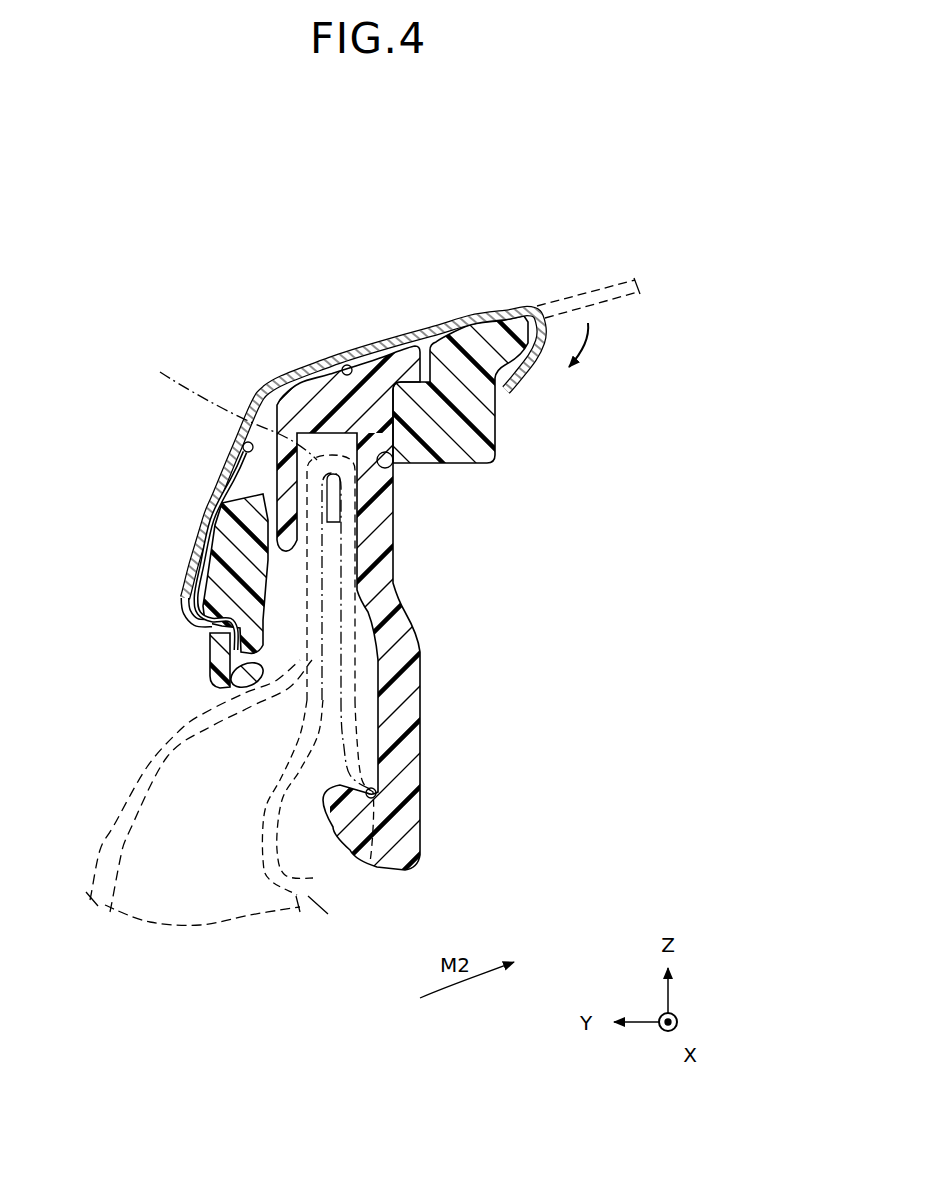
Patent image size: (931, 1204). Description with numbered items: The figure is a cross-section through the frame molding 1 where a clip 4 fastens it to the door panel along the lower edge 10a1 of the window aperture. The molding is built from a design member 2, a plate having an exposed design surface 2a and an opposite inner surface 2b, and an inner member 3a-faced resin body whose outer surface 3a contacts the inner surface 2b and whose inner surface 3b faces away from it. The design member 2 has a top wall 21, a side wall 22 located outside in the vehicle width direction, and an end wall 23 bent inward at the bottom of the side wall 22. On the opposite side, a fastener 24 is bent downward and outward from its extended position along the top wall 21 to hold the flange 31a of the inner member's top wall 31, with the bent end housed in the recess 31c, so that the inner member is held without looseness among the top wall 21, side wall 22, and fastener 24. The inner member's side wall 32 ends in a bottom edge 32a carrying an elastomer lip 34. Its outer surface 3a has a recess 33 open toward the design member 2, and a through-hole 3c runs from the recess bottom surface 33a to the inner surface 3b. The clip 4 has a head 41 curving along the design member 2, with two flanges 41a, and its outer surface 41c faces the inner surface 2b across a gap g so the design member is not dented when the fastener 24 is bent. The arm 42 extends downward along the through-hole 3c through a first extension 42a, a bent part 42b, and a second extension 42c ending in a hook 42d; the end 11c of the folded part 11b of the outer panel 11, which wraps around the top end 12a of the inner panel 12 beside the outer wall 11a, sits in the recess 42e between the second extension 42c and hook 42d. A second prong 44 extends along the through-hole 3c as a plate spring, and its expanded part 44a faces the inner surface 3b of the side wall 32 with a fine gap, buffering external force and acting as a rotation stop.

The frame molding 1 is at (251, 206).
The design member 2 is at (516, 300).
The design surface 2a is at (370, 350).
The inner surface 2b is at (345, 366).
The outer surface 3a is at (484, 335).
The inner surface 3b is at (460, 460).
The through-hole 3c is at (395, 466).
The clip 4 is at (258, 388).
The lower edge 10a1 is at (213, 399).
The outer panel 11 is at (109, 822).
The outer wall 11a is at (147, 770).
The folded part 11b is at (355, 707).
The end 11c is at (370, 862).
The inner panel 12 is at (270, 866).
The top end 12a is at (355, 553).
The top wall 21 is at (462, 330).
The side wall 22 is at (267, 517).
The end wall 23 is at (203, 622).
The fastener 24 is at (593, 303).
The top wall 31 is at (490, 430).
The flange 31a is at (560, 320).
The recess 31c is at (497, 412).
The side wall 32 is at (195, 593).
The bottom edge 32a is at (217, 657).
The recess 33 is at (424, 372).
The bottom surface 33a is at (418, 362).
The lip 34 is at (232, 680).
The head 41 is at (300, 395).
The flange 41a is at (391, 352).
The outer surface 41c is at (282, 378).
The arm 42 is at (425, 845).
The first extension 42a is at (380, 520).
The bent part 42b is at (390, 600).
The second extension 42c is at (410, 747).
The hook 42d is at (330, 822).
The recess 42e is at (378, 787).
The second prong 44 is at (240, 470).
The expanded part 44a is at (220, 505).
The gap g is at (345, 365).